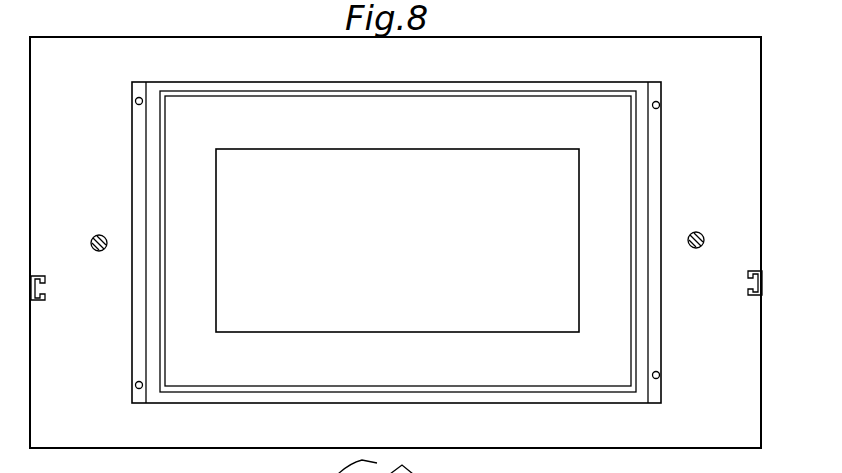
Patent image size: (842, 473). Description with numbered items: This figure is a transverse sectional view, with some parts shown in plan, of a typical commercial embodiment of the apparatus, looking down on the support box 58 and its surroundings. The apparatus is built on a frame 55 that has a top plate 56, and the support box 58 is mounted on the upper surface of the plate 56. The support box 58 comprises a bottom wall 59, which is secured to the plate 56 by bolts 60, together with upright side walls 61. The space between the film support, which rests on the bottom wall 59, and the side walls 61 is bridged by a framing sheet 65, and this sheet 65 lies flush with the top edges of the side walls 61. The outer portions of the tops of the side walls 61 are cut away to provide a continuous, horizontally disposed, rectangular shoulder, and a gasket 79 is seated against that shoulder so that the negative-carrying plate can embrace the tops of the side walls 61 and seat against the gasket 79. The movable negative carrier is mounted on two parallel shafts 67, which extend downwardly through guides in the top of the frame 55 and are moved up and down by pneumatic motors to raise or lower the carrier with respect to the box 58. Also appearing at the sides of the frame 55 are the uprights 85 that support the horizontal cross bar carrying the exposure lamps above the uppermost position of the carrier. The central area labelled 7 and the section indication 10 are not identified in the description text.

The picture 7 is at (403, 244).
The section line 10- 10 is at (158, 240).
The frame 55 is at (125, 449).
The top plate 56 is at (100, 429).
The support box 58 is at (226, 391).
The bottom wall 59 is at (701, 281).
The bolts 60 is at (660, 105).
The side walls 61 is at (630, 125).
The framing sheet 65 is at (412, 369).
The shafts 67 is at (93, 236).
The gasket 79 is at (302, 399).
The uprights 85 is at (38, 276).